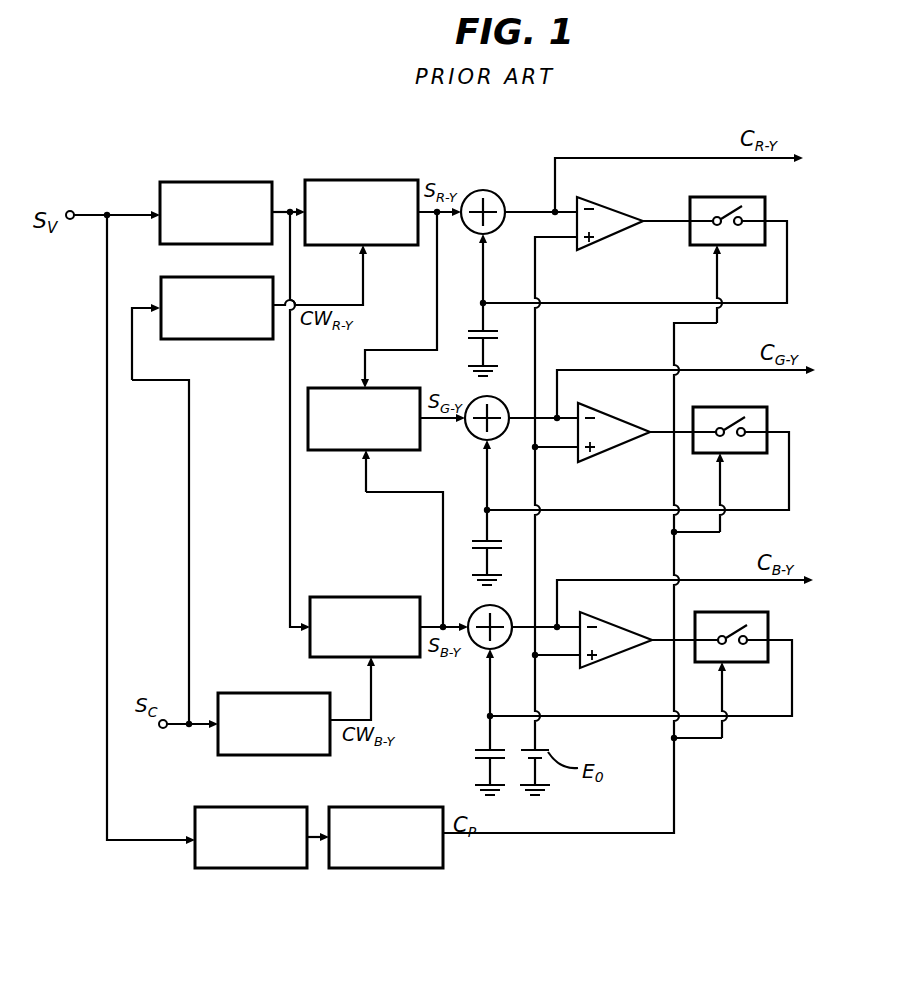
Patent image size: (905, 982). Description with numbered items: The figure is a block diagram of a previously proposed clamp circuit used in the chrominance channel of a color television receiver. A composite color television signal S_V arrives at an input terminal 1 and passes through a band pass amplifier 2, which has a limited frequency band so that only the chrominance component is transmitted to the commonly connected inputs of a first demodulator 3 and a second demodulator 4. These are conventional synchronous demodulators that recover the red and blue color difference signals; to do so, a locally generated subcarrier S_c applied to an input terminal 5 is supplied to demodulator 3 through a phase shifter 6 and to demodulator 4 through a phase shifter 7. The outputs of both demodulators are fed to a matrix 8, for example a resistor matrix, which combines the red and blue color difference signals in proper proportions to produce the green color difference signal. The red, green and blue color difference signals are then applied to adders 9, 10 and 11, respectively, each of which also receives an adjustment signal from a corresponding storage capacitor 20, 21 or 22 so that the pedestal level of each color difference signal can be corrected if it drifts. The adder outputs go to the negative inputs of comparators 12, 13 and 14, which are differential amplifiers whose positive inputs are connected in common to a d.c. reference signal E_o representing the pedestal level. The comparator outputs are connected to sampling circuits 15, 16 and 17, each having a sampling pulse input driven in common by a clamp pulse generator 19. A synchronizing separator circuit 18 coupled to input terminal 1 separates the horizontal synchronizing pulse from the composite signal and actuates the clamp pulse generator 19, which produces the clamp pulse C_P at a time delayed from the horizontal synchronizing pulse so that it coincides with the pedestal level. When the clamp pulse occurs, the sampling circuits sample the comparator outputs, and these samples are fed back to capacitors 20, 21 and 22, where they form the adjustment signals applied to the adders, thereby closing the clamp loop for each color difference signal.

The input terminal 1 is at (78, 226).
The band pass amplifier 2 is at (232, 246).
The demodulator 3 is at (325, 247).
The demodulator 4 is at (350, 658).
The input terminal 5 is at (166, 730).
The phase shifter 6 is at (232, 341).
The phase shifter 7 is at (304, 757).
The matrix 8 is at (339, 452).
The adder 9 is at (500, 232).
The adder 10 is at (506, 438).
The adder 11 is at (510, 648).
The comparator 12 is at (618, 242).
The comparator 13 is at (618, 455).
The comparator 14 is at (622, 660).
The sampling circuit 15 is at (742, 244).
The sampling circuit 16 is at (740, 455).
The sampling circuit 17 is at (743, 665).
The synchronizing separator circuit 18 is at (283, 870).
The clamp pulse generator 19 is at (428, 870).
The storage capacitor 20 is at (482, 340).
The storage capacitor 21 is at (480, 543).
The storage capacitor 22 is at (486, 755).